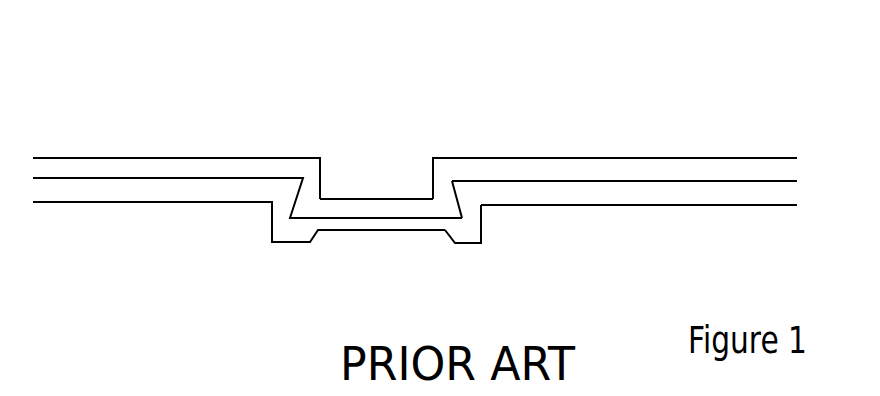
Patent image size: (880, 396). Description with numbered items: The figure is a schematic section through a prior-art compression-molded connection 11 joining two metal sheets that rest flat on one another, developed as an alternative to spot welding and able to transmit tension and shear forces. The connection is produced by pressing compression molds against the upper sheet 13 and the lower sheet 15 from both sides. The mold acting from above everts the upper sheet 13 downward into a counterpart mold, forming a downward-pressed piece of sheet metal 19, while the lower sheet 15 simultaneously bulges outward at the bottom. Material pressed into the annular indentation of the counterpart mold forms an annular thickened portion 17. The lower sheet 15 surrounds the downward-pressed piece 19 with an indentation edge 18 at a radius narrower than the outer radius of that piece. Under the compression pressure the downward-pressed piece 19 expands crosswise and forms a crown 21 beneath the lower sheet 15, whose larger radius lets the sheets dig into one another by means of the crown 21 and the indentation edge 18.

The compression-molded connection 11 is at (452, 70).
The upper metal sheet 13 is at (603, 158).
The lower metal sheet 15 is at (568, 205).
The annular thickened portion 17 is at (468, 245).
The indentation edge 18 is at (463, 190).
The downward-pressed piece of sheet metal 19 is at (385, 199).
The crown 21 is at (455, 208).